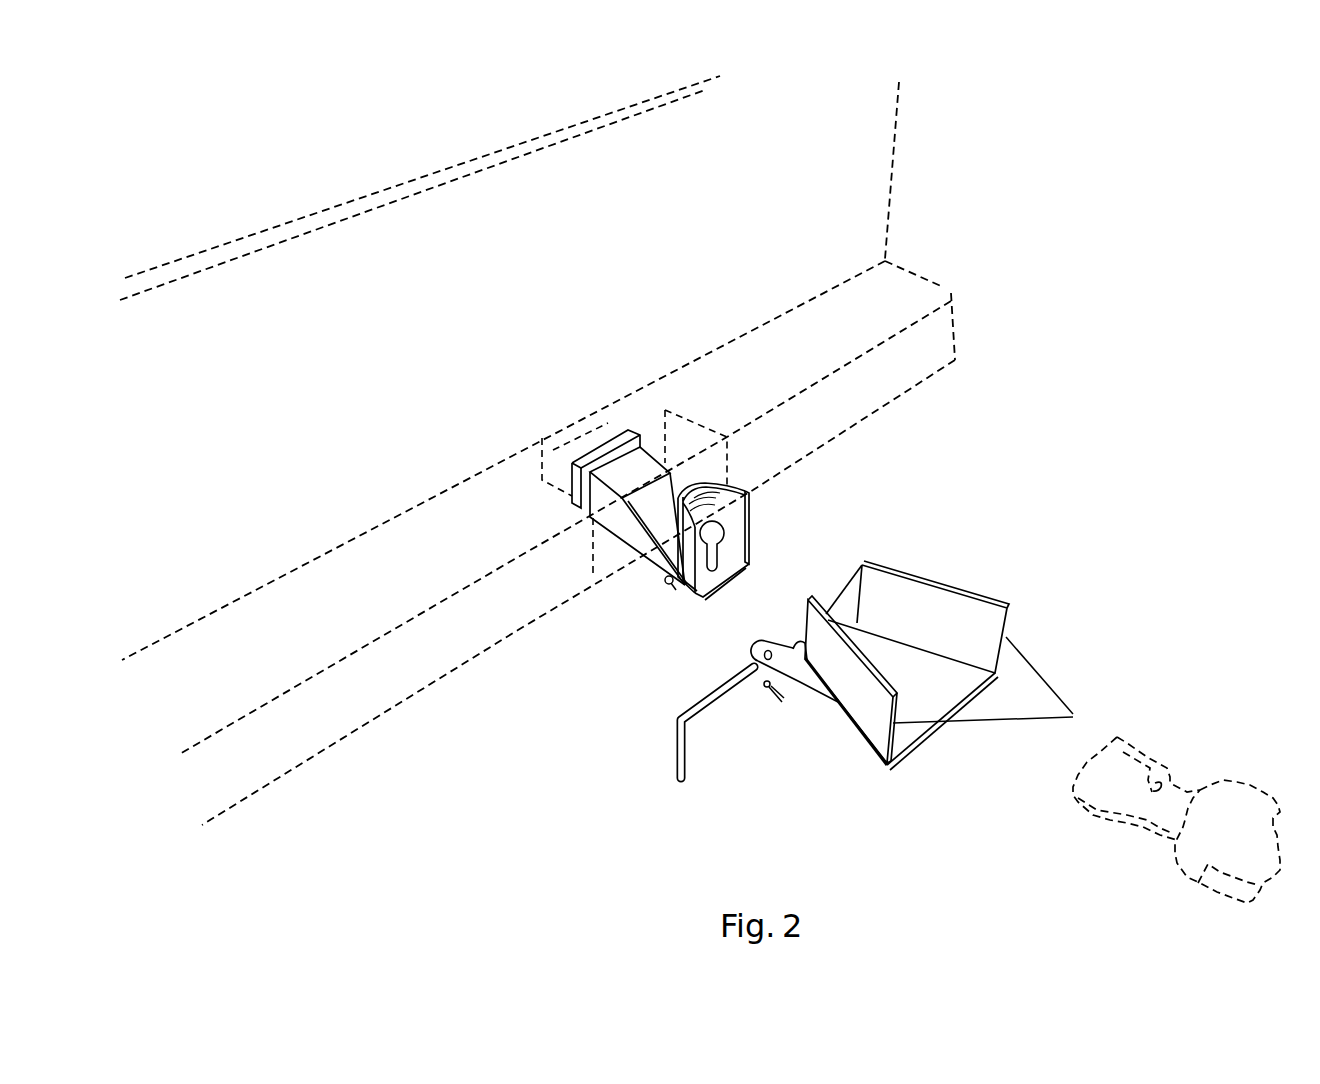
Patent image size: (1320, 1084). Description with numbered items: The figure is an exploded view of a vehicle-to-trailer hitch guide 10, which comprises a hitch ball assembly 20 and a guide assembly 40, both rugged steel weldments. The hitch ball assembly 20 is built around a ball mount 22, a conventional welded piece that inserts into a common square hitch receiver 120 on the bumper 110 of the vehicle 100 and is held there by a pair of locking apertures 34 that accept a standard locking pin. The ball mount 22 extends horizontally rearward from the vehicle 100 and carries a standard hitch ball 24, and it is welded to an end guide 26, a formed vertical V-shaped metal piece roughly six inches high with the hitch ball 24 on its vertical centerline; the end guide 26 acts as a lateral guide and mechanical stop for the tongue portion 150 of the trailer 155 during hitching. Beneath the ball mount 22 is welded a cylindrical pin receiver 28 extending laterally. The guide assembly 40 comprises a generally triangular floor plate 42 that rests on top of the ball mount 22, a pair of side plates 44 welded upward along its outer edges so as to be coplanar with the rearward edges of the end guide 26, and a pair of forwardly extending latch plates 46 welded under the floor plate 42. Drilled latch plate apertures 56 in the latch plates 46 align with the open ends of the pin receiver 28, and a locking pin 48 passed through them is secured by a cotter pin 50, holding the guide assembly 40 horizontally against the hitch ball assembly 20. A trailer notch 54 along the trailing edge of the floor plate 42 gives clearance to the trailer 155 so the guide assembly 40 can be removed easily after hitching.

The vehicle-to-trailer hitch guide 10 is at (1088, 447).
The hitch ball assembly 20 is at (705, 627).
The ball mount 22 is at (653, 515).
The hitch ball 24 is at (735, 542).
The end guide 26 is at (750, 515).
The pin receiver 28 is at (671, 592).
The locking apertures 34 is at (550, 469).
The guide assembly 40 is at (1020, 605).
The floor plate 42 is at (897, 660).
The side plates 44 is at (997, 683).
The latch plates 46 is at (860, 566).
The locking pin 48 is at (677, 748).
The cotter pin 50 is at (773, 703).
The trailer notch 54 is at (912, 747).
The latch plate apertures 56 is at (763, 662).
The vehicle 100 is at (890, 140).
The vehicle bumper 110 is at (920, 298).
The hitch receiver 120 is at (577, 497).
The tongue portion 150 is at (1177, 790).
The trailer 155 is at (1242, 810).